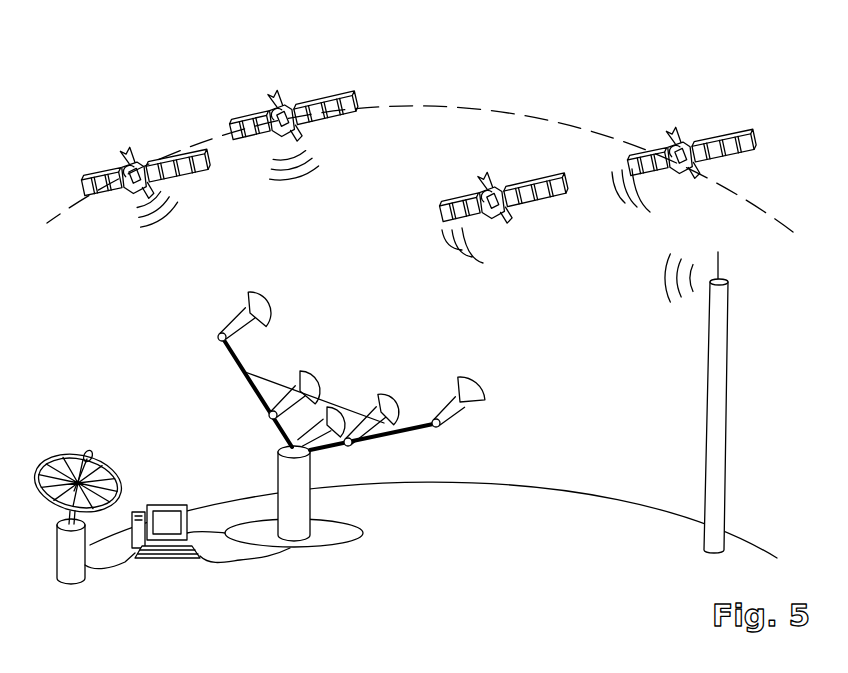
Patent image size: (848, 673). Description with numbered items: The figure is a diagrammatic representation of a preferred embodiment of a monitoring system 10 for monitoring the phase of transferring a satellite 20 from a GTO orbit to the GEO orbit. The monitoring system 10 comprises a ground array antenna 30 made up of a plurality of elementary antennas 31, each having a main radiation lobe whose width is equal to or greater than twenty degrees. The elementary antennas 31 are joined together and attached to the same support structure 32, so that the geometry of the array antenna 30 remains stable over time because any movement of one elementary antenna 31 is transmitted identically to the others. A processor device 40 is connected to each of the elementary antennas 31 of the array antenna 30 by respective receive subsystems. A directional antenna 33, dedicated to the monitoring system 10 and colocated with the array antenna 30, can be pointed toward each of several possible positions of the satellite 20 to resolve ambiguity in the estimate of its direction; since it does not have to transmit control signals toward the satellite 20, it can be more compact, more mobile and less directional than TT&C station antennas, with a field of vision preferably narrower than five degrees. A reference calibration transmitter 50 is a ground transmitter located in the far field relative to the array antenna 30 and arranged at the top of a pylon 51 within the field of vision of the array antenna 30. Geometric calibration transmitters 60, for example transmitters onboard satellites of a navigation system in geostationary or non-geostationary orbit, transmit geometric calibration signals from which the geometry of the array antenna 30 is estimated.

The monitoring system 10 is at (115, 357).
The satellite 20 is at (503, 230).
The ground array antenna 30 is at (318, 357).
The elementary antenna 31 is at (240, 302).
The support structure 32 is at (311, 494).
The directional antenna 33 is at (120, 493).
The processor device 40 is at (160, 556).
The reference calibration transmitter 50 is at (720, 260).
The pylon 51 is at (716, 404).
The geometric calibration transmitter 60 is at (128, 153).